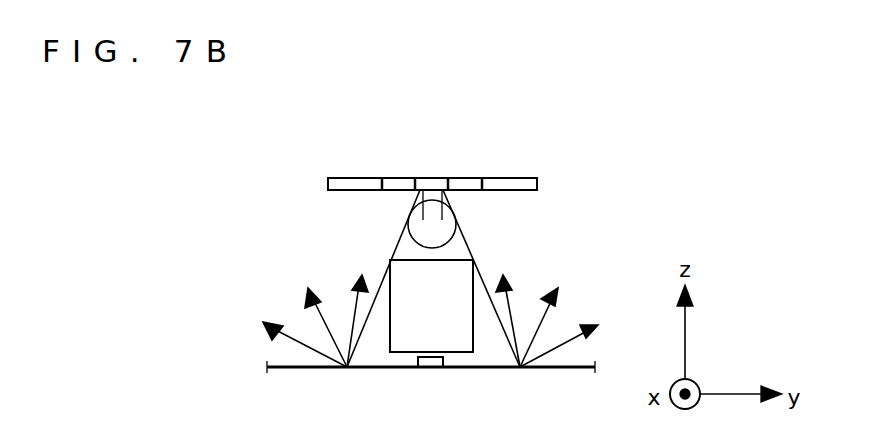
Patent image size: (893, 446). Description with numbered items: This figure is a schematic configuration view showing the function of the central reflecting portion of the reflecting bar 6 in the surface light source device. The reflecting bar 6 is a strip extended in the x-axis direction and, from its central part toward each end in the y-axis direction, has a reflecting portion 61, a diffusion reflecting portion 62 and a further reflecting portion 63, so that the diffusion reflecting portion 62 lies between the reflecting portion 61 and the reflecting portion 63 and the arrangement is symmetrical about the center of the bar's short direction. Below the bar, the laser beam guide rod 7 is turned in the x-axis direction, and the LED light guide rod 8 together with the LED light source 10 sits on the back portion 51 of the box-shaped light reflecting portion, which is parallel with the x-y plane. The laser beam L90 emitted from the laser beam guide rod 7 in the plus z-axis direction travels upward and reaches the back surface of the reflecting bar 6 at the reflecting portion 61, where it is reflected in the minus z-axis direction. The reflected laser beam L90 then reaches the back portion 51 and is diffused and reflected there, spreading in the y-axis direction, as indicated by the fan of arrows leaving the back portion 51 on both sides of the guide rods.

The reflecting bar 6 is at (322, 183).
The reflecting portion 61 is at (433, 182).
The diffusion reflecting portion 62 is at (398, 182).
The reflecting portion 63 is at (350, 182).
The laser beam L90 is at (422, 217).
The laser beam guide rod 7 is at (432, 238).
The LED light guide rod 8 is at (400, 333).
The LED light source 10 is at (430, 368).
The back portion 51 is at (580, 366).